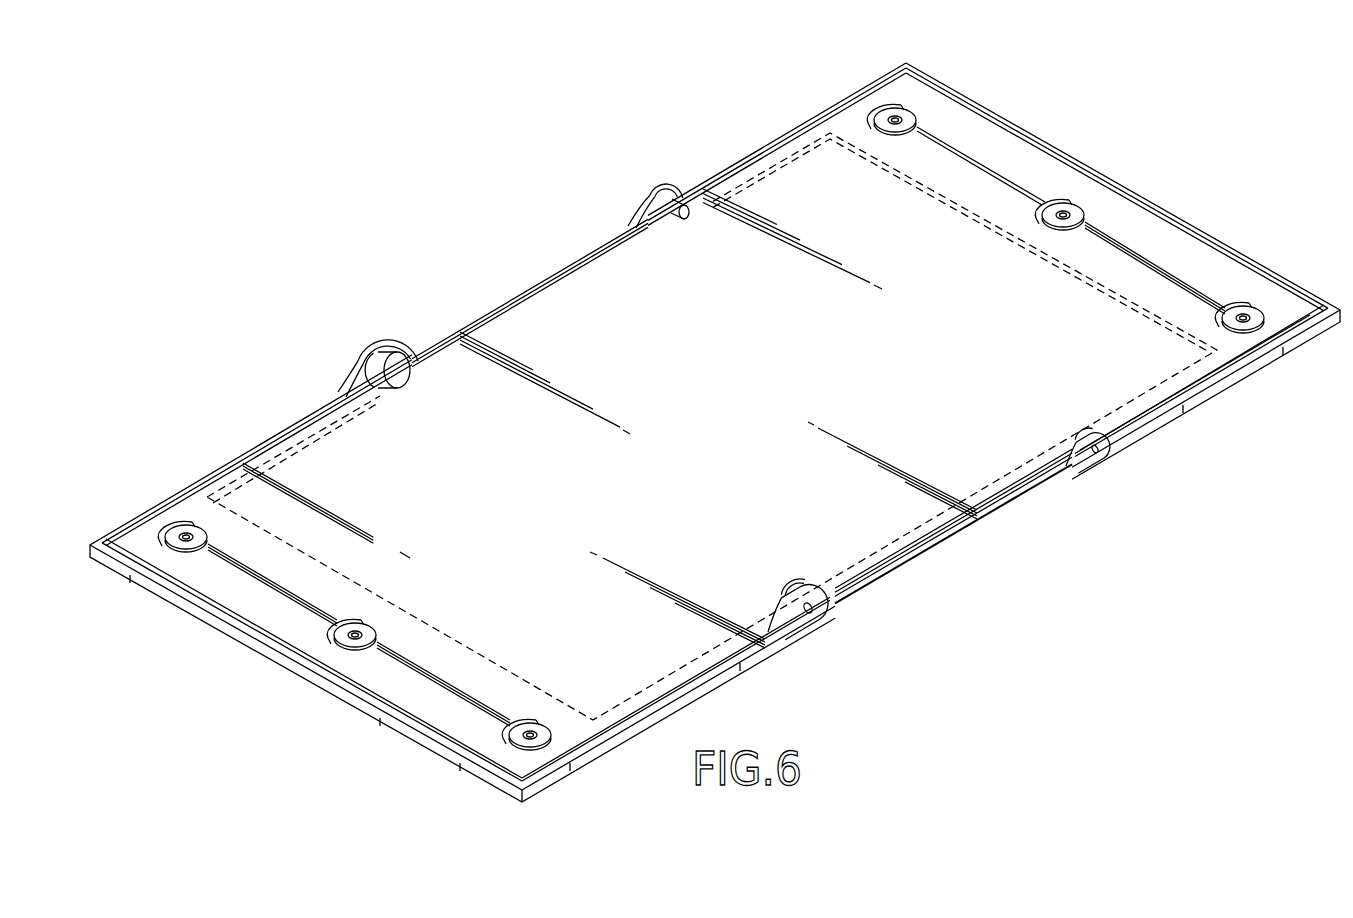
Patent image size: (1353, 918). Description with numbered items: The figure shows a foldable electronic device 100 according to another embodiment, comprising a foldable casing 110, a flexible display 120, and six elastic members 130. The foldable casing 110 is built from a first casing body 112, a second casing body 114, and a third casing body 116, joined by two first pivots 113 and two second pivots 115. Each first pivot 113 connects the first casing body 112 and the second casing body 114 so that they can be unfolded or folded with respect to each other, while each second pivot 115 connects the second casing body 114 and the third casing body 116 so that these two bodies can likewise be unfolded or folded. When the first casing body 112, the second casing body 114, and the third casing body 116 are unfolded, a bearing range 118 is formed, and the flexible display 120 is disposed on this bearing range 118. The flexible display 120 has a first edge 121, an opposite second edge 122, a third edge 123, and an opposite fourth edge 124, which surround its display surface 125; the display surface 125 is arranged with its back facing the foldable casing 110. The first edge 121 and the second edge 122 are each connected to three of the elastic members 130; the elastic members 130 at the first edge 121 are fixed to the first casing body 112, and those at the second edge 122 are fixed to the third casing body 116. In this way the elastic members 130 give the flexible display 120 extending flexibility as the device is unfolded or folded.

The foldable electronic device 100 is at (1150, 690).
The foldable casing 110 is at (1250, 450).
The first casing body 112 is at (1177, 410).
The first pivot 113 is at (668, 186).
The second casing body 114 is at (957, 540).
The second pivot 115 is at (385, 341).
The third casing body 116 is at (733, 673).
The bearing range 118 is at (975, 151).
The flexible display 120 is at (442, 352).
The first edge 121 is at (1190, 288).
The second edge 122 is at (460, 706).
The third edge 123 is at (1228, 373).
The fourth edge 124 is at (778, 150).
The display surface 125 is at (976, 259).
The elastic member 130 is at (907, 113).